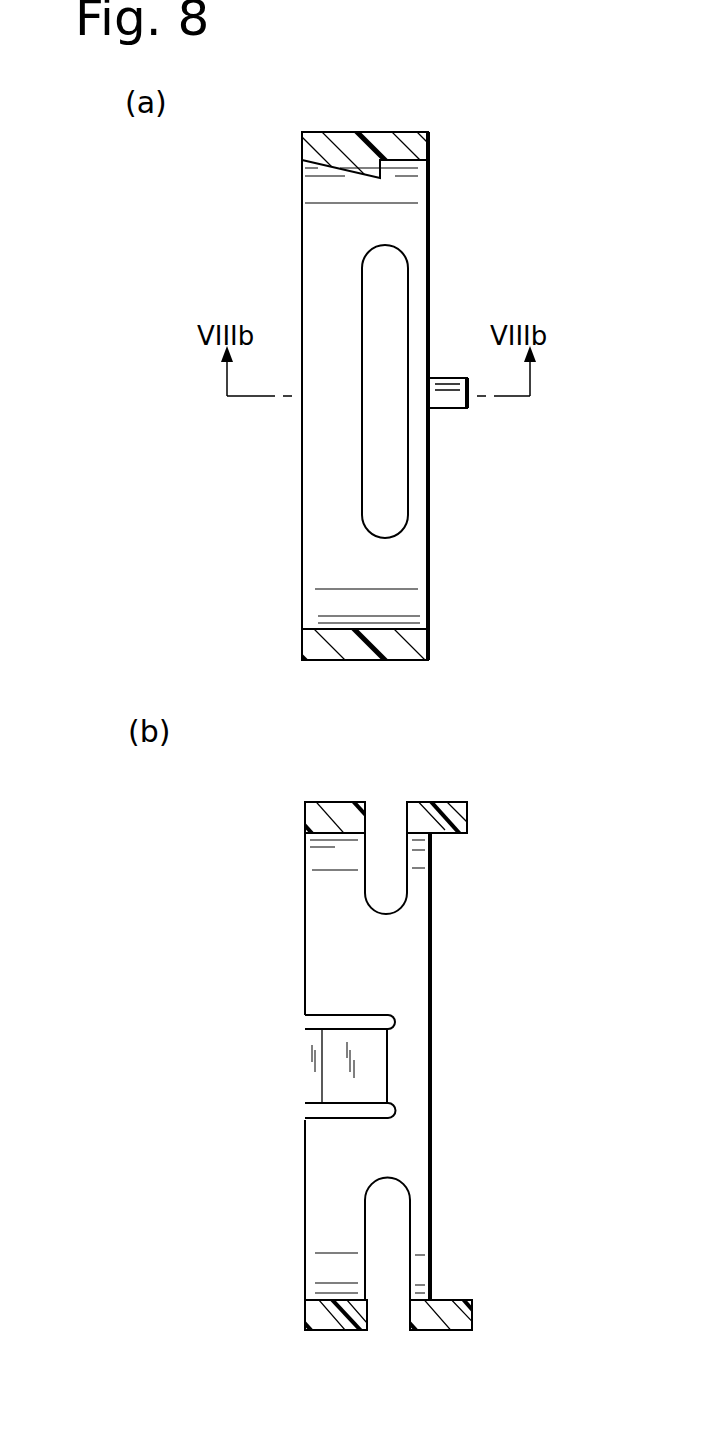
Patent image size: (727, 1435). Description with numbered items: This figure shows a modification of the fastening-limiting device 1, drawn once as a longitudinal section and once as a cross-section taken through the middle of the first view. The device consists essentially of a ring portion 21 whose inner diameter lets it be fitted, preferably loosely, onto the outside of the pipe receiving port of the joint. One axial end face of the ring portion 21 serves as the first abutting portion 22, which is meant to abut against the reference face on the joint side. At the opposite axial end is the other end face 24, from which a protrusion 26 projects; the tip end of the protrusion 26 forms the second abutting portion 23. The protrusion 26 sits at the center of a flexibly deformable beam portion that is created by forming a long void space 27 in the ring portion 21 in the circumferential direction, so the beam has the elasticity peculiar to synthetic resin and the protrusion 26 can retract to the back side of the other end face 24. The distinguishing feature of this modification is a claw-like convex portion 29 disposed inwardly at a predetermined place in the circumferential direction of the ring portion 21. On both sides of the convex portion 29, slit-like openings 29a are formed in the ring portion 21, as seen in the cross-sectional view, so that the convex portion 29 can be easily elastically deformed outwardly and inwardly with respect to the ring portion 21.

The fastening-limiting device 1 is at (437, 134).
The ring portion 21 is at (375, 135).
The first abutting portion 22 is at (302, 641).
The second abutting portion 23 is at (467, 400).
The other end face 24 is at (428, 644).
The protrusion 26 is at (447, 408).
The long void space 27 is at (403, 262).
The claw-like convex portion 29 is at (365, 172).
The slit-like opening 29a is at (338, 1020).